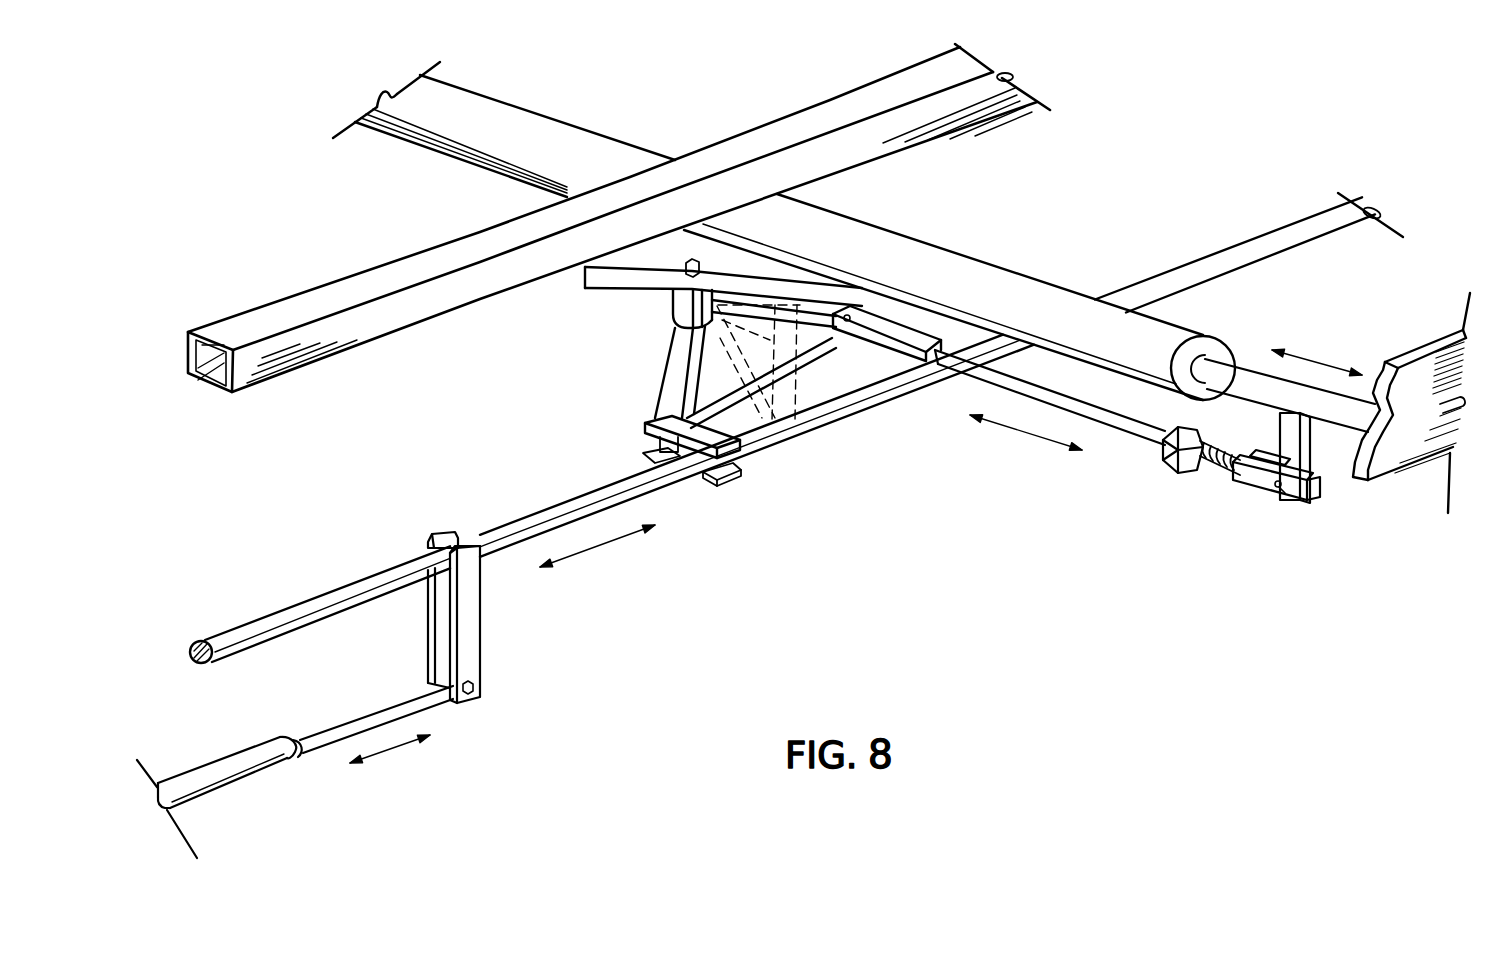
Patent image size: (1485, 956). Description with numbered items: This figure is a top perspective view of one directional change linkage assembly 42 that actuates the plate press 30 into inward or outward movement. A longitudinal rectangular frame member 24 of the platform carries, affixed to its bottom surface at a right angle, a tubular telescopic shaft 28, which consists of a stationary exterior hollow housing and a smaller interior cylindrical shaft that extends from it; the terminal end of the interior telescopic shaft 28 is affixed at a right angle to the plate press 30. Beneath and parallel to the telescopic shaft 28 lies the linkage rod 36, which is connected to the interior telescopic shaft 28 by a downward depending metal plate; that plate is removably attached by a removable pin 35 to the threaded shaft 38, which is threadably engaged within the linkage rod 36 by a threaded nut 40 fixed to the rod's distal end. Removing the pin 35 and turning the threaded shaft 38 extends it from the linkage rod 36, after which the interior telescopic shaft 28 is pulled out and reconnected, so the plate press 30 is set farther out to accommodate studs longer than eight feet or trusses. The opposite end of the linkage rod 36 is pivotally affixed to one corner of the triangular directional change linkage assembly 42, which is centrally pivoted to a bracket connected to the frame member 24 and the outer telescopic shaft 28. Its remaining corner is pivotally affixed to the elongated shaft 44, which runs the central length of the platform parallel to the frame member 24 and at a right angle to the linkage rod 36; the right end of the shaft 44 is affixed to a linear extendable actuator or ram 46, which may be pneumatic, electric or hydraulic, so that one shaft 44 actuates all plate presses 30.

The frame member 24 is at (277, 313).
The telescopic shaft 28 is at (520, 123).
The plate press 30 is at (1408, 433).
The removable pin 35 is at (1279, 495).
The linkage rod 36 is at (973, 372).
The threaded shaft 38 is at (1218, 472).
The threaded nut 40 is at (1170, 462).
The directional change linkage assembly 42 is at (678, 378).
The elongated shaft 44 is at (330, 597).
The ram 46 is at (252, 758).